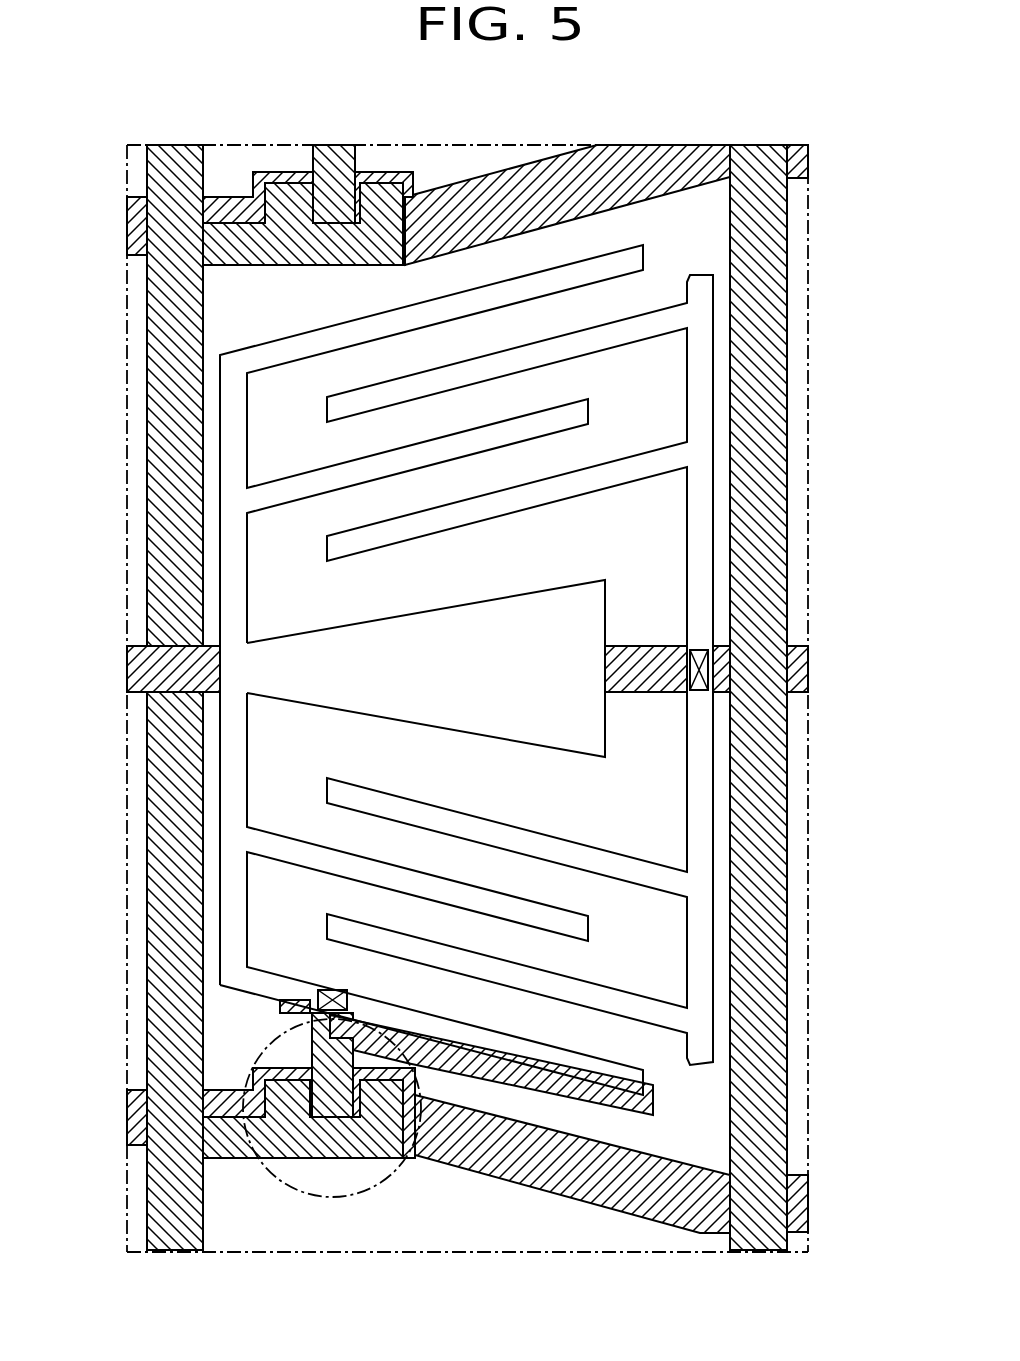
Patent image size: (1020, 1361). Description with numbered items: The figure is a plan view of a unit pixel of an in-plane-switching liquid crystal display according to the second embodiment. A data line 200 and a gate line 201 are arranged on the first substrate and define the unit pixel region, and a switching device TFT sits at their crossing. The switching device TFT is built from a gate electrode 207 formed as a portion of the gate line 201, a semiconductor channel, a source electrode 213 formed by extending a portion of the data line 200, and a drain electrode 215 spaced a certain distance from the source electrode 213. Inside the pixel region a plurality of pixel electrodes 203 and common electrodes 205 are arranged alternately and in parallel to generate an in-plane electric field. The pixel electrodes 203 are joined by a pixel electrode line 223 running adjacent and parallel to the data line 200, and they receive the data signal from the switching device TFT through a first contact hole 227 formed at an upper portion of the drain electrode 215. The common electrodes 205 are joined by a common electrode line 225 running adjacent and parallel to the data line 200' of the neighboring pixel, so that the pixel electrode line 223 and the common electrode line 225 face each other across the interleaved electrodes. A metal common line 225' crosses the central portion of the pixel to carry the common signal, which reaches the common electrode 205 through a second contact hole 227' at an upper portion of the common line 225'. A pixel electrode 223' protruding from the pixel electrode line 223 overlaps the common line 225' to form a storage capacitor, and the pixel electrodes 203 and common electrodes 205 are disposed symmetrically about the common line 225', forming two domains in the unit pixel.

The data line 200 is at (125, 697).
The data line of the neighboring pixel 200' is at (810, 697).
The gate line 201 is at (568, 1183).
The pixel electrode 203 is at (380, 457).
The common electrode 205 is at (553, 492).
The gate electrode 207 is at (287, 1160).
The source electrode 213 is at (387, 1160).
The drain electrode 215 is at (337, 1160).
The pixel electrode line 223 is at (345, 670).
The pixel electrode 223' is at (326, 668).
The common electrode line 225 is at (786, 670).
The common line 225' is at (509, 669).
The first contact hole 227 is at (196, 993).
The second contact hole 227' is at (790, 694).
The switching device TFT is at (250, 1060).